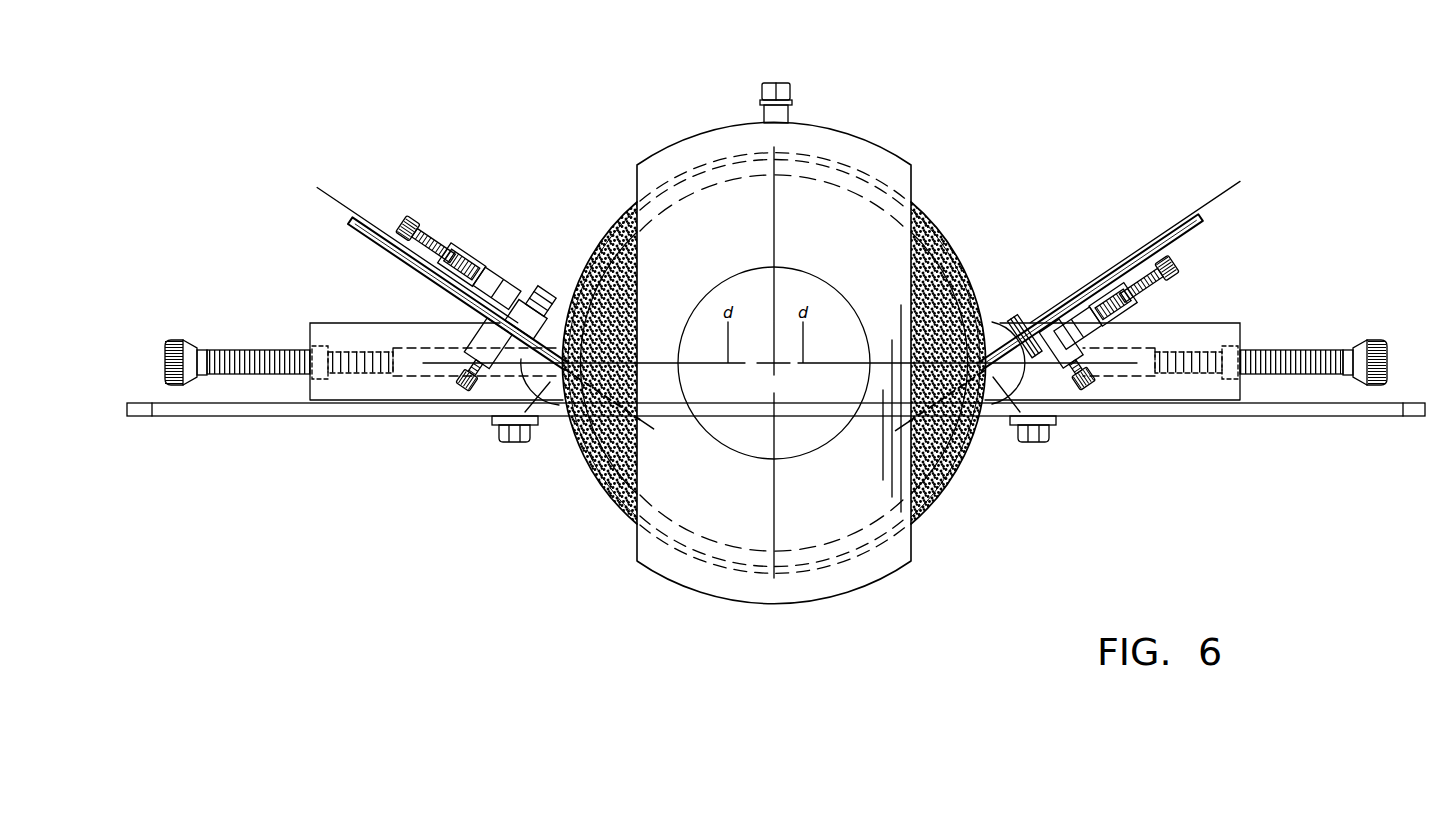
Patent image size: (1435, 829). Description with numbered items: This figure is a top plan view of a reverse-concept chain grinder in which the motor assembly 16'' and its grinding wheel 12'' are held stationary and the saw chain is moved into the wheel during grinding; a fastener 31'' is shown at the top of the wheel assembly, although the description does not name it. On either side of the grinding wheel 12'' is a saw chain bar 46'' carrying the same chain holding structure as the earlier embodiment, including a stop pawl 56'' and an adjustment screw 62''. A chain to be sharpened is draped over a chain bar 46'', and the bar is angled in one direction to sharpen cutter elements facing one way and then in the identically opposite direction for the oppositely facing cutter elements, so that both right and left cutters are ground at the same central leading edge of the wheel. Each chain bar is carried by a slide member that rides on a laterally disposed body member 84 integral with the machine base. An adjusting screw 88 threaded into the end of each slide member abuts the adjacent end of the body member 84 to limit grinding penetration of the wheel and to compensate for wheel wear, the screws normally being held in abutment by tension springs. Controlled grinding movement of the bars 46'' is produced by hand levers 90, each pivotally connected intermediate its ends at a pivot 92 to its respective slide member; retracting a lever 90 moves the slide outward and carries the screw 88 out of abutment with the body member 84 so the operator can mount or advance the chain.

The grinding wheel 12'' is at (782, 350).
The motor assembly 16'' is at (774, 334).
The locking bolt 31'' is at (813, 75).
The saw chain bar 46'' is at (773, 296).
The stop pawl 56'' is at (741, 323).
The adjustment screw 62'' is at (808, 264).
The body member 84 is at (1128, 376).
The adjusting screw 88 is at (236, 350).
The hand lever 90 is at (203, 416).
The pivot 92 is at (514, 442).